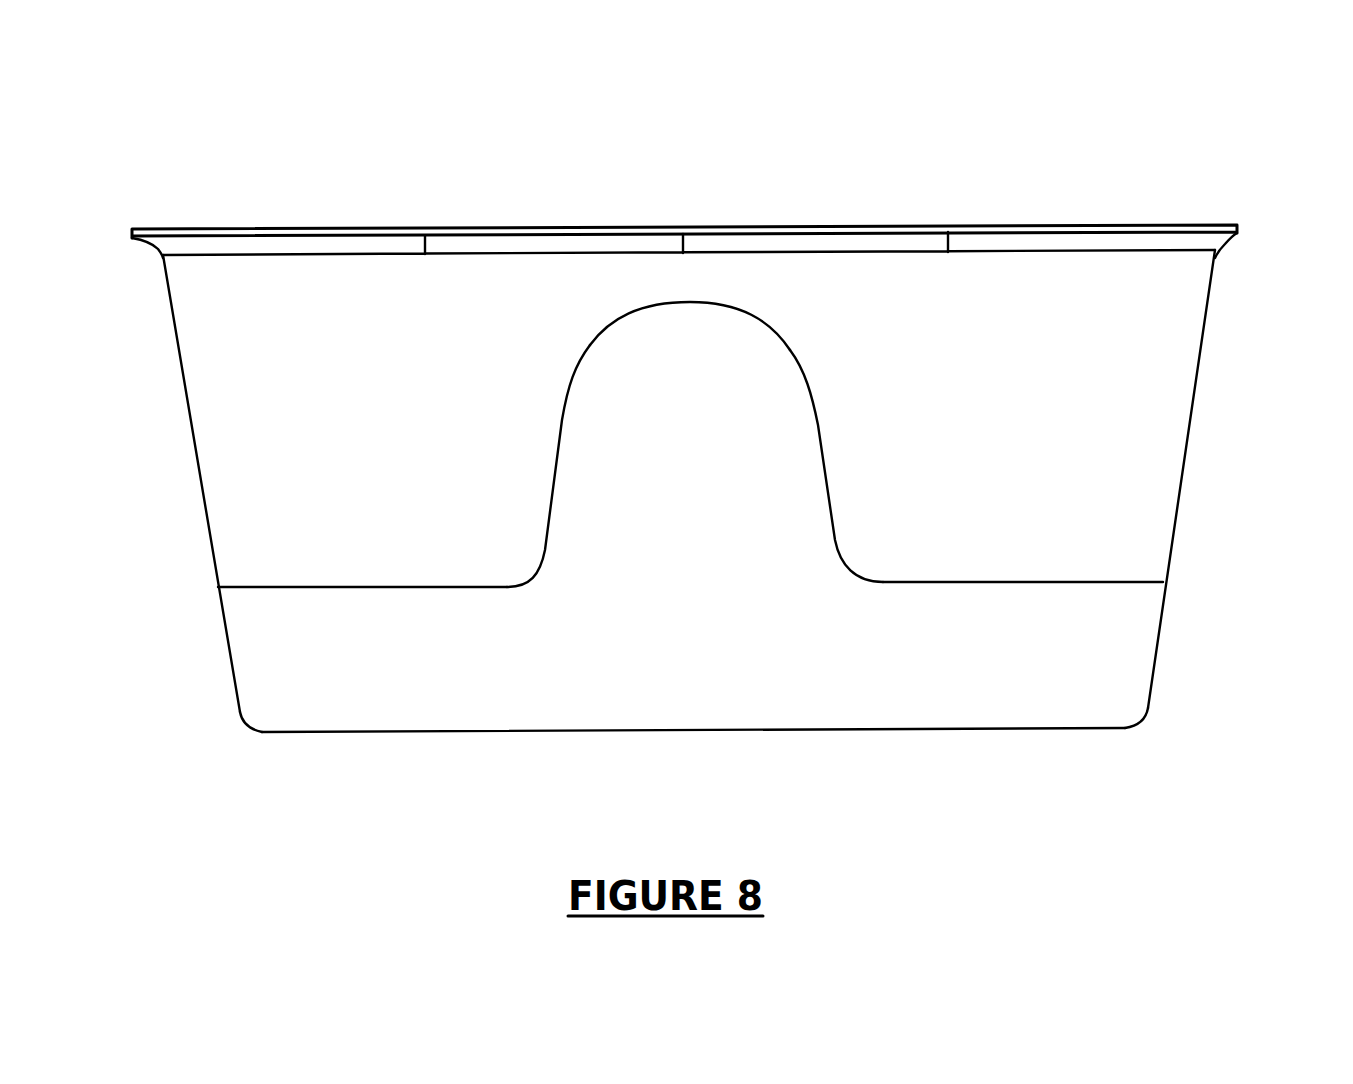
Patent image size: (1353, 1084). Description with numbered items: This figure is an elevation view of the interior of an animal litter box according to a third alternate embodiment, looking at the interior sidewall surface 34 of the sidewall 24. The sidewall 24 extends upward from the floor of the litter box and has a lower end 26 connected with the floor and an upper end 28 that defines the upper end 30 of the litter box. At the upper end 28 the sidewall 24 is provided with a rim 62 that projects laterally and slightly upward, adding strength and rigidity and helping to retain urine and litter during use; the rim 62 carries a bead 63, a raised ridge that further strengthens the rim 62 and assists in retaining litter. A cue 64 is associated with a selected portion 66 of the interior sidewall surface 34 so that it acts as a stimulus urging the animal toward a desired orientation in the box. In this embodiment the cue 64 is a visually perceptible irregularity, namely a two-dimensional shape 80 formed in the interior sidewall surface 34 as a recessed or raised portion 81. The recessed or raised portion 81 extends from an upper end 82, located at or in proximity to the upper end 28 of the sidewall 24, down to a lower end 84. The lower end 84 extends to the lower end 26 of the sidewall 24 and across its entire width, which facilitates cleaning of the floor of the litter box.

The sidewall 24 is at (1153, 423).
The lower end of the sidewall 26 is at (1127, 703).
The upper end of the sidewall 28 is at (1196, 264).
The upper end of the litter box 30 is at (1085, 218).
The interior sidewall surface 34 is at (262, 423).
The rim 62 is at (303, 234).
The bead 63 is at (398, 232).
The cue 64 is at (657, 345).
The selected portion of the interior sidewall surface 66 is at (857, 375).
The two-dimensional shape 80 is at (770, 440).
The recessed or raised portion 81 is at (598, 486).
The upper end of the recessed or raised portion 82 is at (700, 323).
The lower end of the recessed or raised portion 84 is at (707, 695).